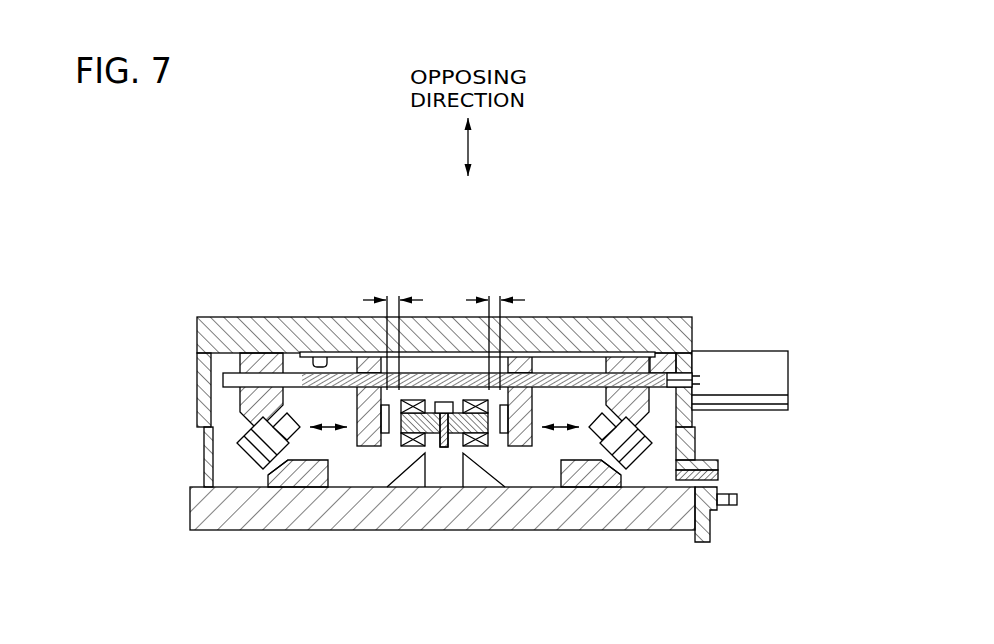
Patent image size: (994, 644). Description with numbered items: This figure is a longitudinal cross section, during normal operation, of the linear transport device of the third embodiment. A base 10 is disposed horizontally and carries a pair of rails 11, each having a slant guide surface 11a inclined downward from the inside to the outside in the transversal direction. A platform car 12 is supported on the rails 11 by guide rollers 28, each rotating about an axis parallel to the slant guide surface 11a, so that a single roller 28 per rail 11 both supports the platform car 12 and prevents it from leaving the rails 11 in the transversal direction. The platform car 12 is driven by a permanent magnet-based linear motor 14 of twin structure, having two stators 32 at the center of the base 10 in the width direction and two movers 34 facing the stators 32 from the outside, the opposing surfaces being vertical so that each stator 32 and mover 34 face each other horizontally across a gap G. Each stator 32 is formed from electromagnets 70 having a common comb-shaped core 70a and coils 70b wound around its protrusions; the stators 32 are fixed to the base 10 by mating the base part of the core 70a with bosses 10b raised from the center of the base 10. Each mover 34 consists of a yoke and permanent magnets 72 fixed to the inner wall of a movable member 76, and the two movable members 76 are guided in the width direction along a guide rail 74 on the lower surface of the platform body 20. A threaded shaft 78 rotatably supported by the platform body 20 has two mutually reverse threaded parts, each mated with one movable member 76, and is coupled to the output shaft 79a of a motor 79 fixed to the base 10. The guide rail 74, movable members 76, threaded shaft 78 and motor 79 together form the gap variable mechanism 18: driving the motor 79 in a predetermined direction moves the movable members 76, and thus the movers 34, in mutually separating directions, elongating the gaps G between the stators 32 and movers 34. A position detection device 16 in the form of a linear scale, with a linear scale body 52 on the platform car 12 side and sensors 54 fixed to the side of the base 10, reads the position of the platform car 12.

The base 10 is at (442, 533).
The boss 10b is at (460, 480).
The rail 11 is at (464, 505).
The slant guide surface 11a is at (280, 460).
The platform car 12 is at (541, 314).
The linear motor 14 is at (462, 422).
The position detection device 16 is at (760, 502).
The gap variable mechanism 18 is at (693, 350).
The platform body 20 is at (444, 401).
The guide roller 28 is at (237, 442).
The stator 32 is at (459, 421).
The mover 34 is at (296, 472).
The linear scale body 52 is at (718, 477).
The sensor 54 is at (800, 468).
The electromagnet 70 is at (459, 421).
The core 70a is at (443, 456).
The coil 70b is at (413, 400).
The permanent magnet 72 is at (457, 408).
The guide rail 74 is at (313, 357).
The movable member 76 is at (357, 412).
The threaded shaft 78 is at (657, 353).
The motor 79 is at (516, 321).
The output shaft 79a is at (698, 380).
The gap G is at (444, 331).